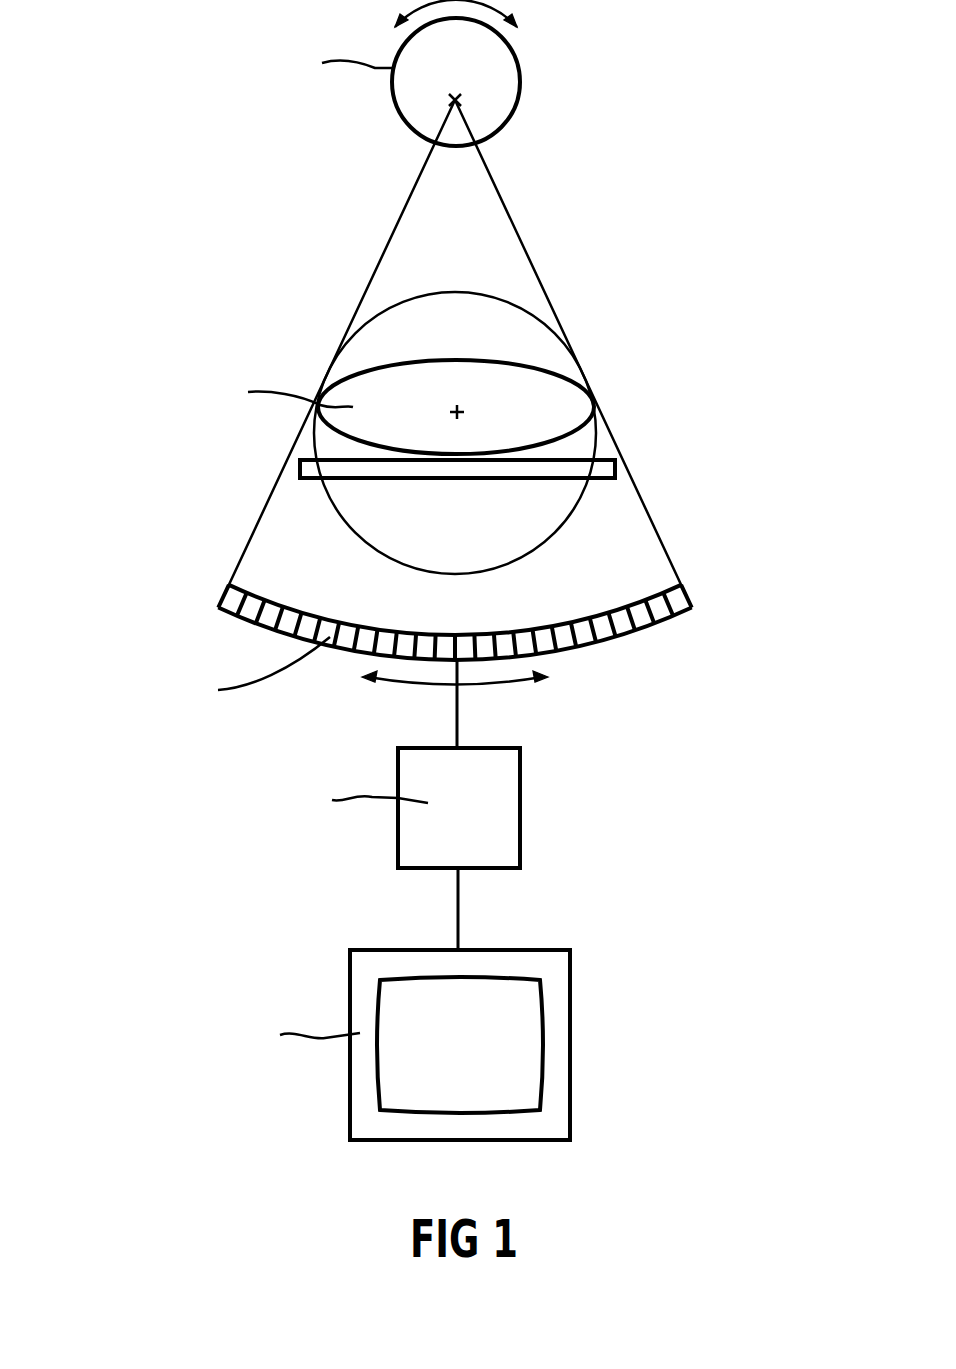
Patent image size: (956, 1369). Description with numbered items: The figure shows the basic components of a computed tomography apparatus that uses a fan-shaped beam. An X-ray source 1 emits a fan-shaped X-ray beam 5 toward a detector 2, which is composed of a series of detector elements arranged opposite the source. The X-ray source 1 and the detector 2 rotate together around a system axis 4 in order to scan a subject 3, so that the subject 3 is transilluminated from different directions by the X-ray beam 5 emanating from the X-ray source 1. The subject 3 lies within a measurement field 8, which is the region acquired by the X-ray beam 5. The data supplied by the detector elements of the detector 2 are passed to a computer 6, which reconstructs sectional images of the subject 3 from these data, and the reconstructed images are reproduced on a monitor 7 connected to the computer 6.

The X-ray source 1 is at (520, 77).
The detector 2 is at (612, 638).
The subject 3 is at (370, 366).
The system axis 4 is at (462, 408).
The fan-shaped X-ray beam 5 is at (540, 280).
The computer 6 is at (522, 800).
The monitor 7 is at (572, 1040).
The measurement field 8 is at (560, 525).